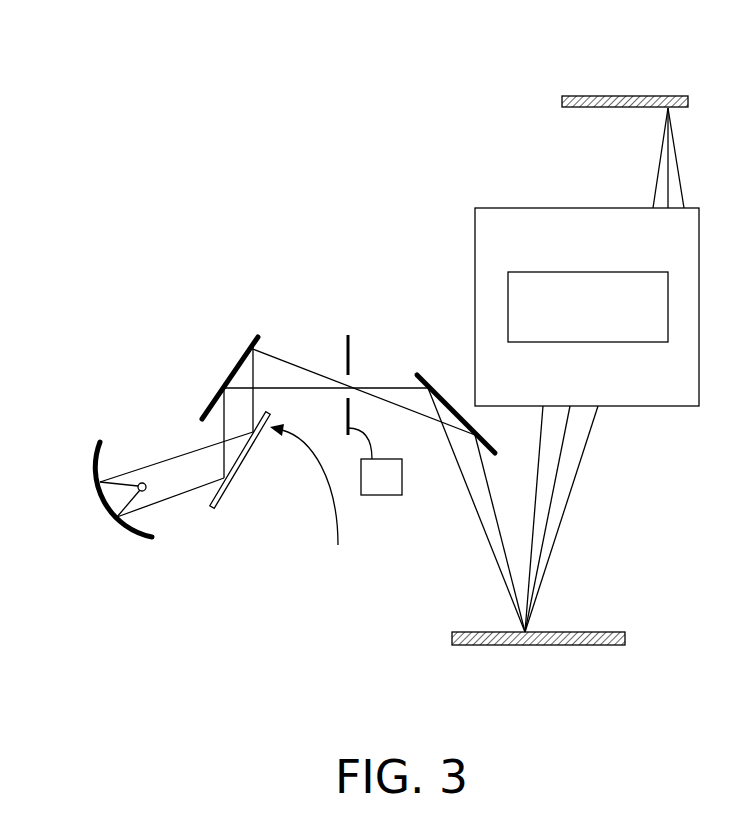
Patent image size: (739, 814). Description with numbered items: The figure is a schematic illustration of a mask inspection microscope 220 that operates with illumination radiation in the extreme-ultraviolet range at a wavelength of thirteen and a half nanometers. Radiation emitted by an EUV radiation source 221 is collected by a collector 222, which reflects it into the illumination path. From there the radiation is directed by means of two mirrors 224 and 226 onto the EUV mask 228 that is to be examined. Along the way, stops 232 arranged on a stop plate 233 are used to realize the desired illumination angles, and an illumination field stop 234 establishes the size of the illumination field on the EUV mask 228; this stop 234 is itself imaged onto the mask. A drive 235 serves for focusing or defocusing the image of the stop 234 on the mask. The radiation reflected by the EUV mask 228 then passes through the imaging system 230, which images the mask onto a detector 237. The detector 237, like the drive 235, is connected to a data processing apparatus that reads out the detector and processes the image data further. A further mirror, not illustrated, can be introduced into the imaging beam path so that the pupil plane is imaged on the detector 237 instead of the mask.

The illumination system 220 is at (213, 169).
The EUV radiation source 221 is at (148, 490).
The collector 222 is at (98, 457).
The mirror 224 is at (230, 378).
The mirror 226 is at (421, 372).
The EUV mask 228 is at (578, 645).
The imaging system 230 is at (475, 226).
The stops 232 is at (243, 467).
The stop plate 233 is at (320, 502).
The illumination field stop 234 is at (349, 347).
The drive 235 is at (402, 480).
The detector 237 is at (587, 96).